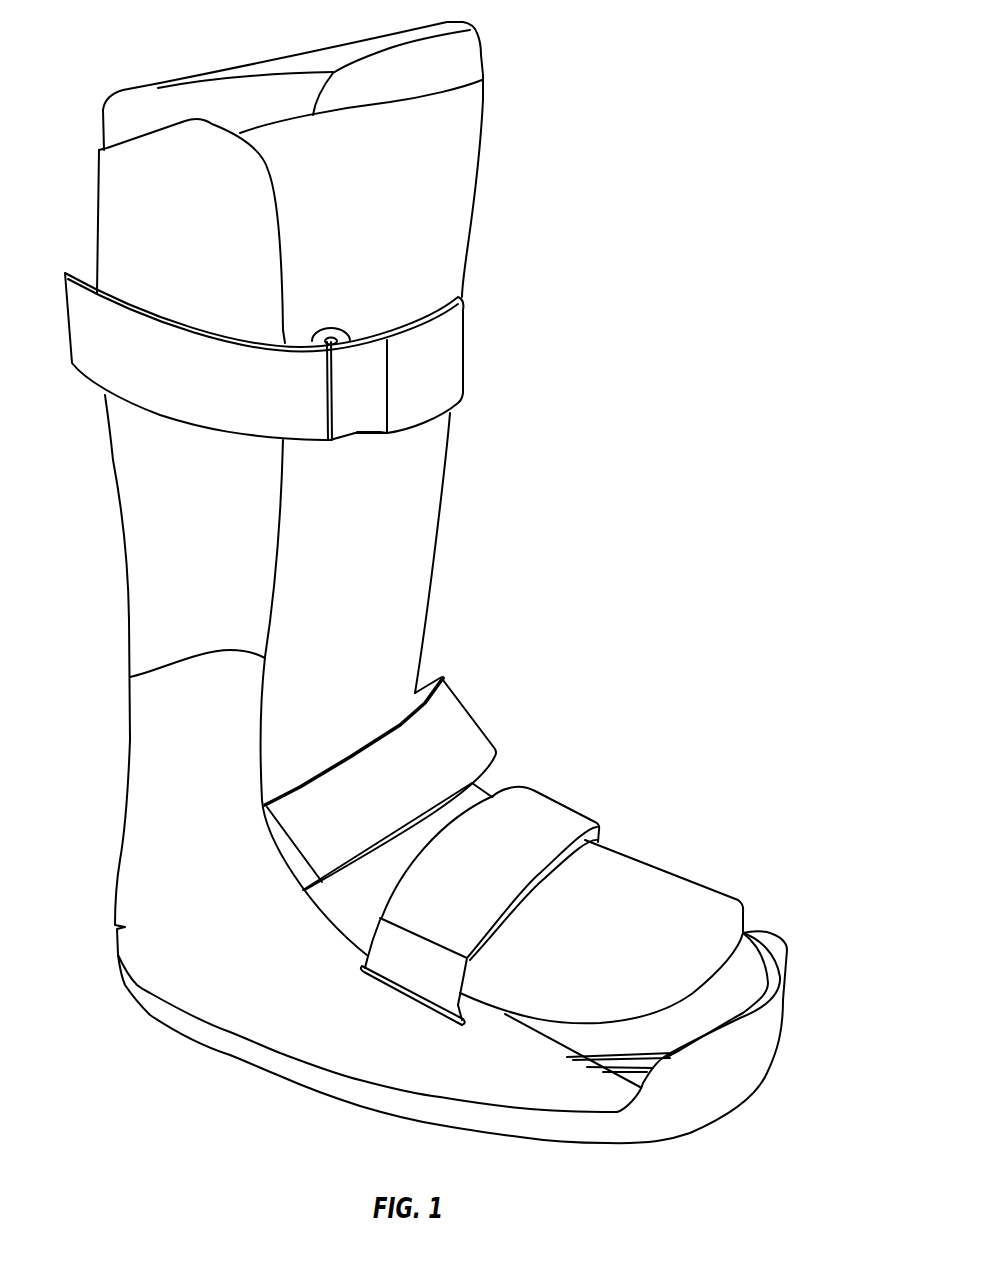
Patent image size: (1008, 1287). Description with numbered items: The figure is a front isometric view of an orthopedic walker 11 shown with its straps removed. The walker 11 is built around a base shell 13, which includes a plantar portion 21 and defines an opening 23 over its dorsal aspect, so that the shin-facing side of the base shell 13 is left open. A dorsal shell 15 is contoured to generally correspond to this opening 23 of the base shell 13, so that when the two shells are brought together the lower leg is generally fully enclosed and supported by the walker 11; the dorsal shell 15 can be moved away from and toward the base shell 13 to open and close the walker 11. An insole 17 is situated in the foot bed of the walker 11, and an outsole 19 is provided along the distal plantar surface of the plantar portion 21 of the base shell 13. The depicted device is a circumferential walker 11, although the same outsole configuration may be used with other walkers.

The walker 11 is at (640, 281).
The base shell 13 is at (150, 598).
The dorsal shell 15 is at (420, 515).
The insole 17 is at (753, 957).
The outsole 19 is at (762, 1036).
The plantar portion 21 is at (290, 1040).
The opening 23 is at (130, 678).